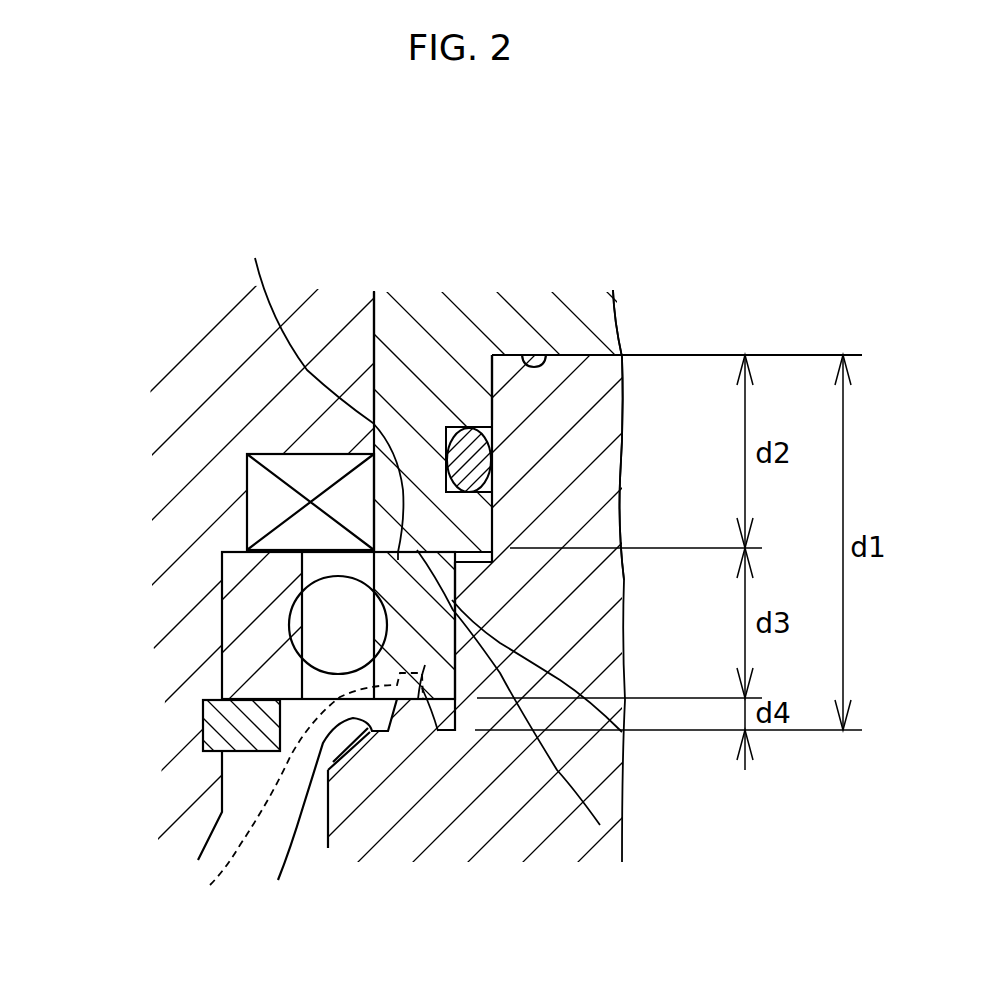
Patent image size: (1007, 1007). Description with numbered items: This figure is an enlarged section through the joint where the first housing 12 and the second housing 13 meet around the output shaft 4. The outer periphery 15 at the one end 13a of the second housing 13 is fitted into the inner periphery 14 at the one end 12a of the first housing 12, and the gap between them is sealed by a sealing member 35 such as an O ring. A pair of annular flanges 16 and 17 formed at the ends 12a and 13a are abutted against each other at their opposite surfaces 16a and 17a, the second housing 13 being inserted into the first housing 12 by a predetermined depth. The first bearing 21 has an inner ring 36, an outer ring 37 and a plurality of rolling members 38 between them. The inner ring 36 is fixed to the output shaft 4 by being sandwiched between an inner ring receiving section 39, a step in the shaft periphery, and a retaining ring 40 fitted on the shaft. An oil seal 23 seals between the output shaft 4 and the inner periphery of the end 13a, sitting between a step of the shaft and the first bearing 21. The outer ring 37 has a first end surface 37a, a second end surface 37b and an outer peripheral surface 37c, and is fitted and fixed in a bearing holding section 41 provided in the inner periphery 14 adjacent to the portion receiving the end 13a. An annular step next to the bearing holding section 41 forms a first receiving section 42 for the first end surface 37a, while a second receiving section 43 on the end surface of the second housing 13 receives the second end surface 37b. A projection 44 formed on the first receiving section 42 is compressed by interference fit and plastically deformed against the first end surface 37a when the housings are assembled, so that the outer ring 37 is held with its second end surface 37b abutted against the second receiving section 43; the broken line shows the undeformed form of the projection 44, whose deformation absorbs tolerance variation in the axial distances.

The output shaft 4 is at (177, 793).
The first housing 12 is at (483, 893).
The one end of the first housing 12a is at (593, 428).
The second housing 13 is at (590, 241).
The one end of the second housing 13a is at (397, 333).
The inner periphery 14 is at (492, 367).
The outer periphery 15 is at (588, 357).
The annular flange 16 is at (597, 478).
The opposite surface 16a is at (558, 355).
The annular flange 17 is at (593, 317).
The opposite surface 17a is at (528, 362).
The first bearing 21 is at (442, 550).
The oil seal 23 is at (310, 463).
The sealing member 35 is at (463, 460).
The inner ring 36 is at (240, 633).
The outer ring 37 is at (383, 662).
The first end surface 37a is at (438, 731).
The second end surface 37b is at (313, 389).
The outer peripheral surface 37c is at (600, 825).
The rolling members 38 is at (313, 630).
The inner ring receiving section 39 is at (237, 555).
The retaining ring 40 is at (222, 727).
The bearing holding section 41 is at (418, 699).
The first receiving section 42 is at (324, 805).
The second receiving section 43 is at (622, 732).
The projection 44 is at (405, 712).